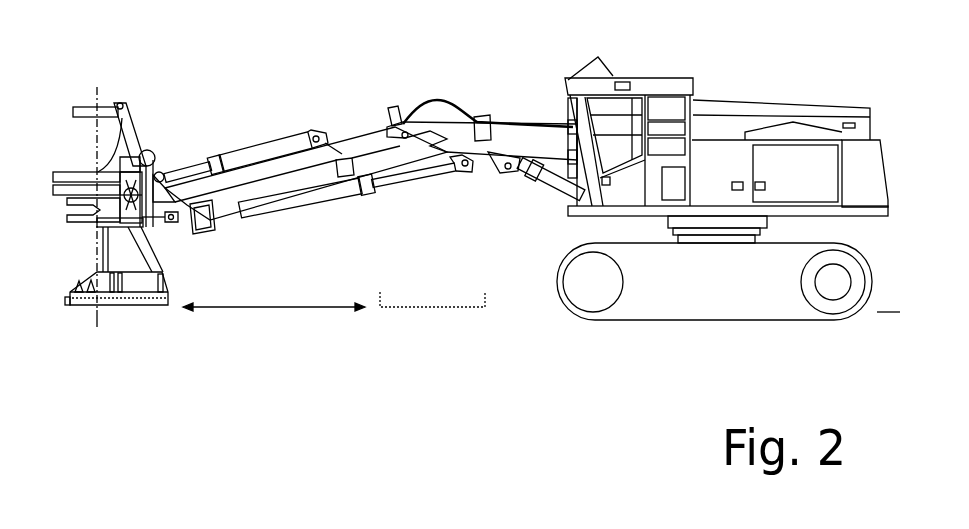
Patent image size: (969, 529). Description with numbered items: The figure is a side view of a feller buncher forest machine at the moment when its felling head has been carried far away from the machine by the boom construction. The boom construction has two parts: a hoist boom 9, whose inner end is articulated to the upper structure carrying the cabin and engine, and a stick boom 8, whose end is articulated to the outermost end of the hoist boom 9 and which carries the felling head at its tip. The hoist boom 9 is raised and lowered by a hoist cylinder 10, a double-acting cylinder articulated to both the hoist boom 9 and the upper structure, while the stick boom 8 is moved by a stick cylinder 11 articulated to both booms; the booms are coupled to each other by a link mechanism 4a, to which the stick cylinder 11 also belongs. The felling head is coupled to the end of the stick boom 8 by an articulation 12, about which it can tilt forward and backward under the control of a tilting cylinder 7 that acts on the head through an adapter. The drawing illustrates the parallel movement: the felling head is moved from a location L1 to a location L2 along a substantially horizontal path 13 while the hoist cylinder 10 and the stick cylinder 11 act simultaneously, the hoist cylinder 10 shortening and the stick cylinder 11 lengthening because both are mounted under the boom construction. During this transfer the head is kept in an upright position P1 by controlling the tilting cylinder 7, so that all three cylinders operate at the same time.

The position P1 is at (99, 86).
The tilting cylinder 7 is at (250, 156).
The stick boom 8 is at (353, 150).
The hoist boom 9 is at (513, 140).
The link mechanism 4a is at (405, 156).
The stick cylinder 11 is at (376, 192).
The hoist cylinder 10 is at (557, 194).
The articulation 12 is at (174, 222).
The location L2 is at (133, 321).
The horizontal path 13 is at (270, 309).
The location L1 is at (438, 320).